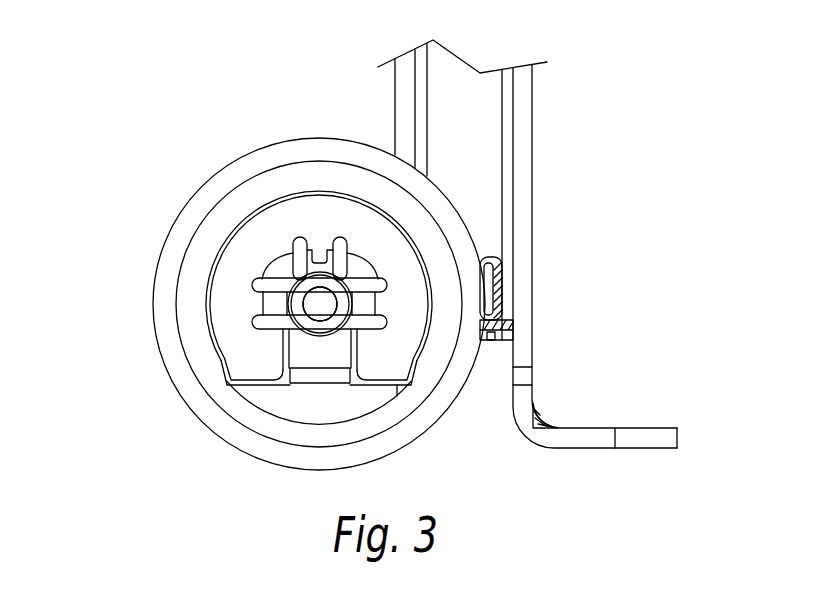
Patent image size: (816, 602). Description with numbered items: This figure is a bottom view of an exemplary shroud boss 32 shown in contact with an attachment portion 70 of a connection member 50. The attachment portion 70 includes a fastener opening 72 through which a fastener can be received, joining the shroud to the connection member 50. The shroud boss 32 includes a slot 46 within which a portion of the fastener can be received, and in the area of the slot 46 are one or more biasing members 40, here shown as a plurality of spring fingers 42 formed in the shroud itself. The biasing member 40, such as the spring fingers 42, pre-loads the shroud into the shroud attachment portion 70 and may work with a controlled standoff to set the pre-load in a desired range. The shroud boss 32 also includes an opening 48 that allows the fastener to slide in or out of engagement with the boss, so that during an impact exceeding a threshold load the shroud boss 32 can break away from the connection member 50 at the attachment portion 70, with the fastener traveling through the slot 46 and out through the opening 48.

The shroud boss 32 is at (182, 243).
The biasing member 40 is at (322, 258).
The spring fingers 42 is at (320, 304).
The slot 46 is at (303, 386).
The opening 48 is at (318, 408).
The connection member 50 is at (523, 133).
The attachment portion 70 is at (338, 348).
The fastener opening 72 is at (322, 304).